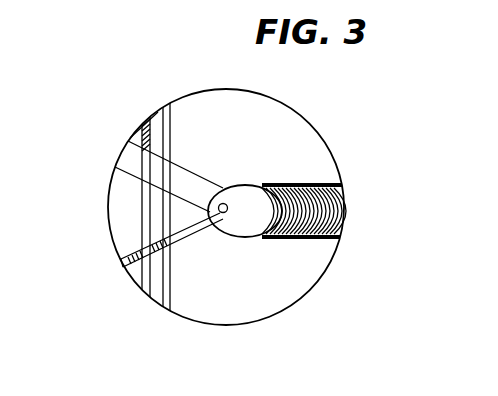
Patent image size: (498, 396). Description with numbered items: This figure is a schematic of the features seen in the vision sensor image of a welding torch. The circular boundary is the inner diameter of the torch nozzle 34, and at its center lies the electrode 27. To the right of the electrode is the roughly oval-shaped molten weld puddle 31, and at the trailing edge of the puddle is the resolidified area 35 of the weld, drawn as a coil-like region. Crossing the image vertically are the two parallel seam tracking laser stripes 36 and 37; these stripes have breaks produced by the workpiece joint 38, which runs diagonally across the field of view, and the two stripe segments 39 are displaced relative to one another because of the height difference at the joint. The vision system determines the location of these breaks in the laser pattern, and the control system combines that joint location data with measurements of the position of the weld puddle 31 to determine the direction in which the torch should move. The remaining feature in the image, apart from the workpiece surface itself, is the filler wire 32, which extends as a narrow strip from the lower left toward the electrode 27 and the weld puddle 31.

The electrode 27 is at (223, 203).
The molten weld puddle 31 is at (253, 232).
The filler wire 32 is at (192, 233).
The inner diameter of the torch nozzle 34 is at (110, 232).
The resolidified area 35 is at (320, 183).
The seam tracking laser stripe 36 is at (137, 120).
The seam tracking laser stripe 37 is at (168, 122).
The workpiece joint 38 is at (137, 155).
The stripe segments 39 is at (180, 180).